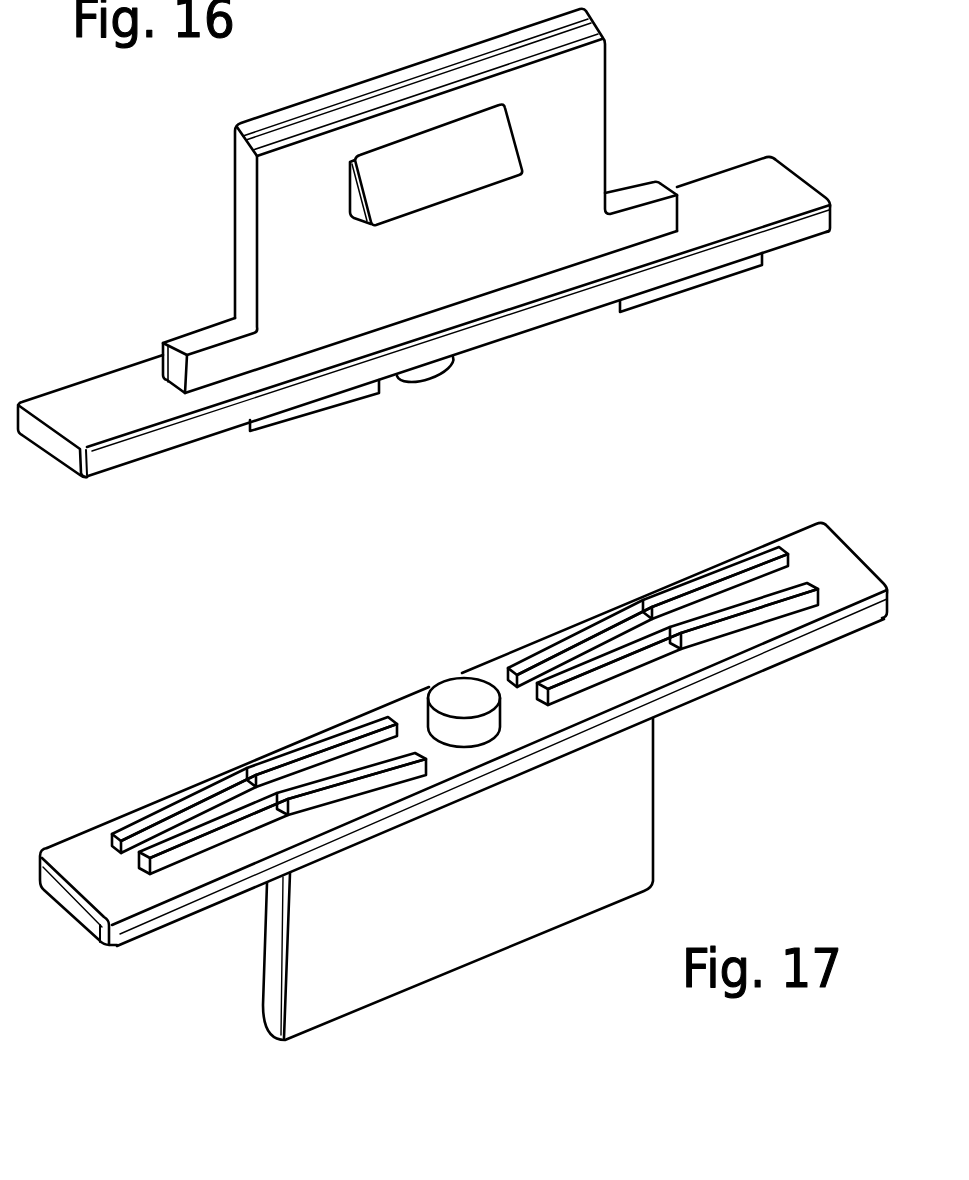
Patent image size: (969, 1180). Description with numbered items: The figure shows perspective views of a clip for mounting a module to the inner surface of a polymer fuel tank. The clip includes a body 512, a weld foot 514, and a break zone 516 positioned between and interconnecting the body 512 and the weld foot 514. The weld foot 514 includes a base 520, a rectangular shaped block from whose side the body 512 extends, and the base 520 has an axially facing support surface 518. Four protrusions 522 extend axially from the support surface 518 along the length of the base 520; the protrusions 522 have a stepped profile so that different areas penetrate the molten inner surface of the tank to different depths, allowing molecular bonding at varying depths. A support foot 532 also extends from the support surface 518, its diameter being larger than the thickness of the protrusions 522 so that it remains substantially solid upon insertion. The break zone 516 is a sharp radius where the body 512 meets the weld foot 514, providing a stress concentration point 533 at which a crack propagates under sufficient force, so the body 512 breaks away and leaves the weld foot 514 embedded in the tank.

In FIG. 16, the body 512 is at (587, 80).
In FIG. 16, the weld foot 514 is at (703, 188).
In FIG. 16, the break zone 516 is at (233, 378).
In FIG. 17, the support surface 518 is at (818, 557).
In FIG. 16, the base 520 is at (43, 438).
In FIG. 17, the base 520 is at (137, 927).
In FIG. 16, the protrusions 522 is at (280, 422).
In FIG. 17, the protrusions 522 is at (363, 777).
In FIG. 16, the support foot 532 is at (443, 363).
In FIG. 17, the support foot 532 is at (470, 697).
In FIG. 16, the stress concentration point 533 is at (507, 286).